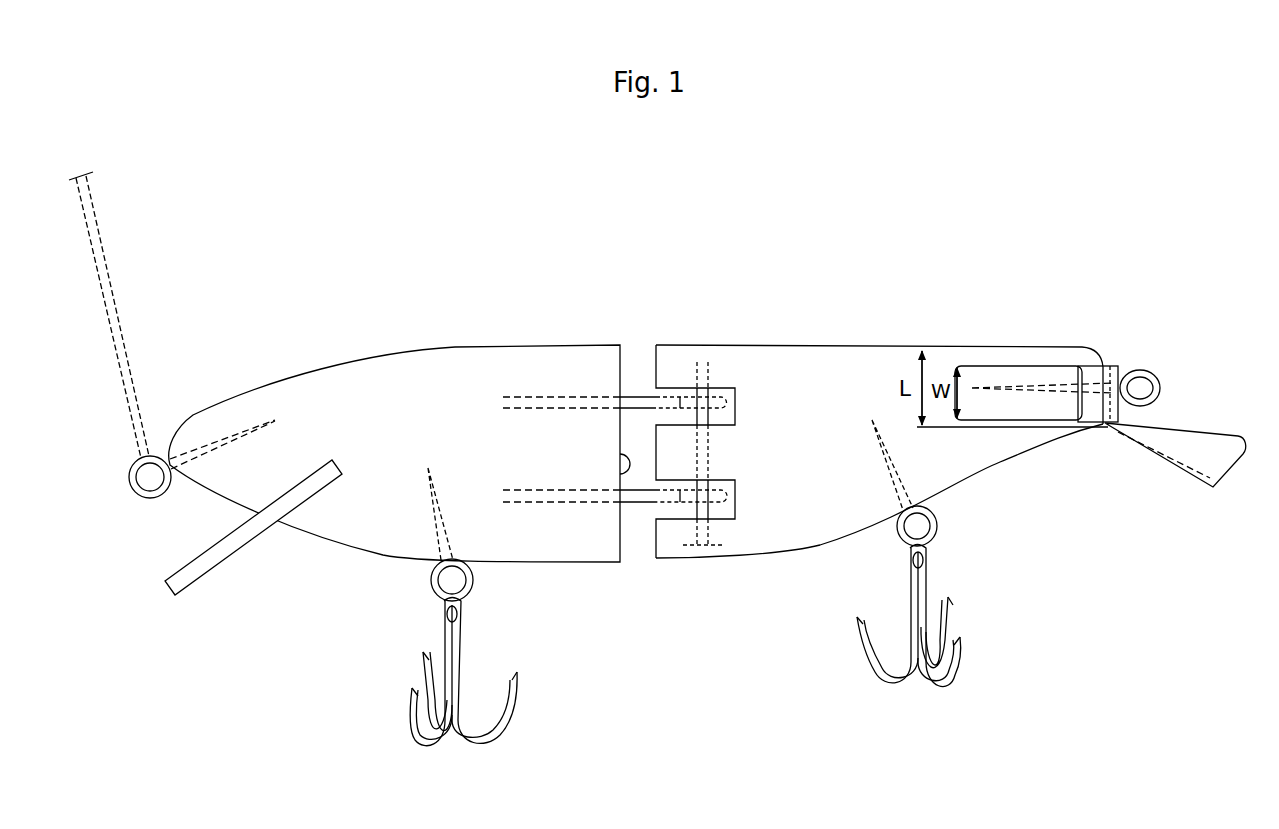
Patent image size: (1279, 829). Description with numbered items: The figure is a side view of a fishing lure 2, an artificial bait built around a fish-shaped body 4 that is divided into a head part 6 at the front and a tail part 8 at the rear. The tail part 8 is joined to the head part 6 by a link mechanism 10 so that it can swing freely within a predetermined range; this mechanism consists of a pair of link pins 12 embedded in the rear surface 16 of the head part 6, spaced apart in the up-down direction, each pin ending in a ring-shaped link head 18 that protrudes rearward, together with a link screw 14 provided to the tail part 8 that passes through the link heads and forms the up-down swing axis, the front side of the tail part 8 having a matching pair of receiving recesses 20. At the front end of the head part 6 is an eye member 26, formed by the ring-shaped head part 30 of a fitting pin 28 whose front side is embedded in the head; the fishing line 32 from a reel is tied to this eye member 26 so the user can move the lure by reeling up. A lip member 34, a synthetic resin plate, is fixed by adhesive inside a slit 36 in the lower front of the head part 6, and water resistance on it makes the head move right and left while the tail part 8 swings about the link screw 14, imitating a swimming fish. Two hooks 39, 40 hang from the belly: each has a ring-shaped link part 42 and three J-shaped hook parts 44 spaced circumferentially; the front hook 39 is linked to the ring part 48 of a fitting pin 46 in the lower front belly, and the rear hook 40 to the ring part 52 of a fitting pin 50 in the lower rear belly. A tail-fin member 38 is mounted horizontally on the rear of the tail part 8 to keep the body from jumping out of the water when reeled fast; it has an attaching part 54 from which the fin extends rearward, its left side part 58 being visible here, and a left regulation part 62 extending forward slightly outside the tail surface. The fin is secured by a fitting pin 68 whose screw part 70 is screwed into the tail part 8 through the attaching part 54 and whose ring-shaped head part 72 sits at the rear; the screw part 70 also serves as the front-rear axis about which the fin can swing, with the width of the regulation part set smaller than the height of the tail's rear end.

The fishing lure 2 is at (686, 280).
The fish-shaped body 4 is at (851, 340).
The head part 6 is at (455, 368).
The tail part 8 is at (784, 530).
The link mechanism 10 is at (643, 384).
The link pins 12 is at (630, 396).
The link screw 14 is at (706, 452).
The rear surface 16 is at (615, 459).
The link heads 18 is at (738, 402).
The receiving recesses 20 is at (668, 420).
The eye member 26 is at (140, 512).
The fitting pin 28 is at (217, 440).
The ring-shaped head part 30 is at (128, 478).
The fishing line 32 is at (122, 316).
The lip member 34 is at (215, 567).
The slit 36 is at (308, 493).
The tail-fin member 38 is at (1156, 474).
The hook 39 is at (474, 647).
The hook 40 is at (939, 578).
The ring-shaped link part 42 is at (468, 609).
The hook parts 44 is at (486, 741).
The fitting pin 46 is at (432, 520).
The ring part 48 is at (432, 583).
The fitting pin 50 is at (930, 480).
The ring part 52 is at (938, 522).
The attaching part 54 is at (1115, 366).
The left side part 58 is at (1226, 436).
The left regulation part 62 is at (1090, 372).
The fitting pin 68 is at (1144, 364).
The screw part 70 is at (1035, 376).
The ring-shaped head part 72 is at (1162, 388).